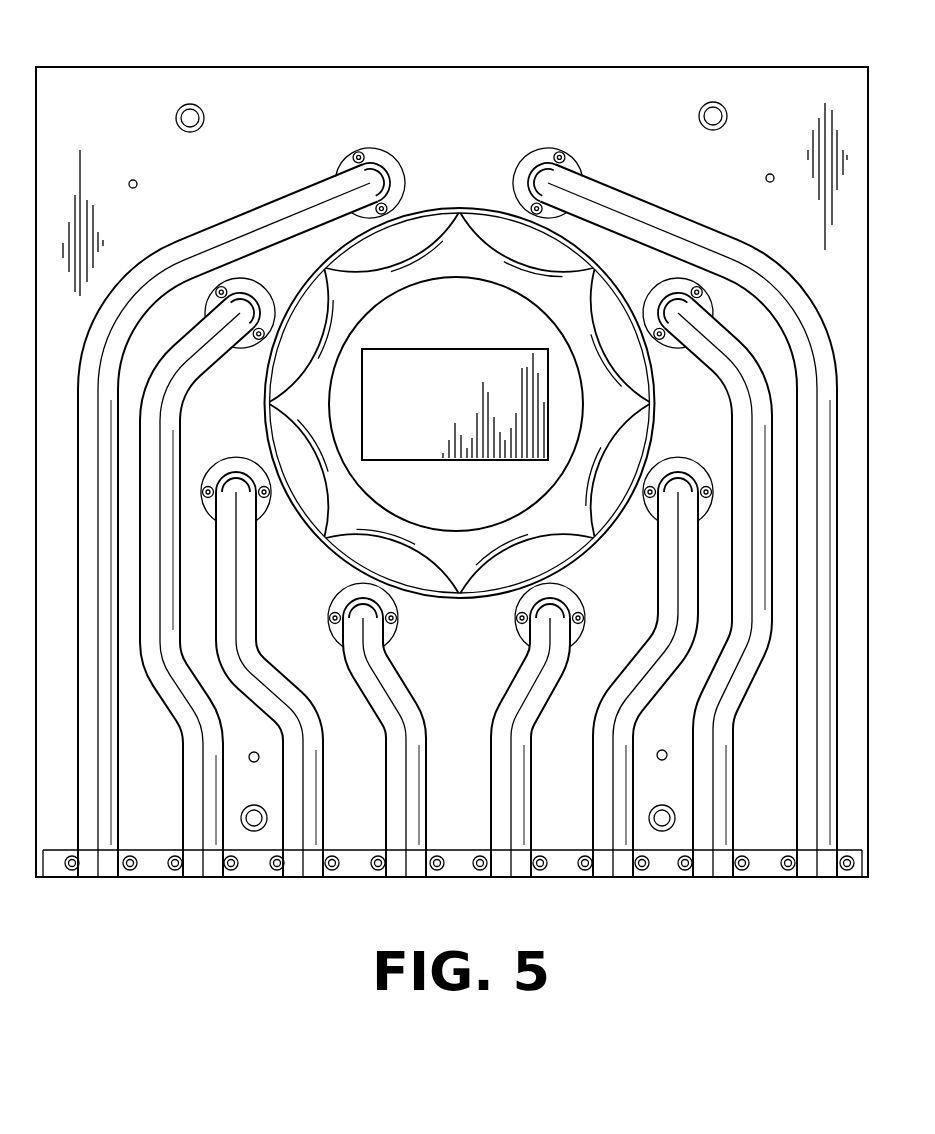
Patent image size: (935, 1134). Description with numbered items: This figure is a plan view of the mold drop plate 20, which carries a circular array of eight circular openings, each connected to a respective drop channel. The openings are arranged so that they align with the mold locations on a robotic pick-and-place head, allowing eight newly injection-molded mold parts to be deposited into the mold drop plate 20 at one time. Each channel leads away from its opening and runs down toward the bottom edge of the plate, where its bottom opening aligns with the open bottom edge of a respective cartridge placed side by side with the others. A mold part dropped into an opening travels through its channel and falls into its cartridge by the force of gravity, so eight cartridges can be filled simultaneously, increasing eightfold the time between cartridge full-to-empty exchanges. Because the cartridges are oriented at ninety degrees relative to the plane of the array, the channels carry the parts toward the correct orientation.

The mold drop plate 20 is at (478, 103).